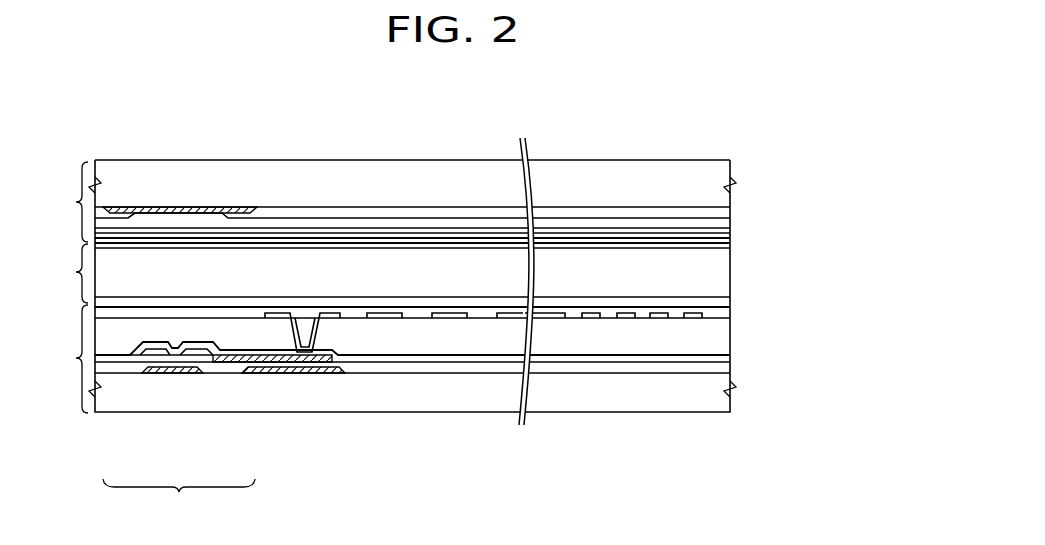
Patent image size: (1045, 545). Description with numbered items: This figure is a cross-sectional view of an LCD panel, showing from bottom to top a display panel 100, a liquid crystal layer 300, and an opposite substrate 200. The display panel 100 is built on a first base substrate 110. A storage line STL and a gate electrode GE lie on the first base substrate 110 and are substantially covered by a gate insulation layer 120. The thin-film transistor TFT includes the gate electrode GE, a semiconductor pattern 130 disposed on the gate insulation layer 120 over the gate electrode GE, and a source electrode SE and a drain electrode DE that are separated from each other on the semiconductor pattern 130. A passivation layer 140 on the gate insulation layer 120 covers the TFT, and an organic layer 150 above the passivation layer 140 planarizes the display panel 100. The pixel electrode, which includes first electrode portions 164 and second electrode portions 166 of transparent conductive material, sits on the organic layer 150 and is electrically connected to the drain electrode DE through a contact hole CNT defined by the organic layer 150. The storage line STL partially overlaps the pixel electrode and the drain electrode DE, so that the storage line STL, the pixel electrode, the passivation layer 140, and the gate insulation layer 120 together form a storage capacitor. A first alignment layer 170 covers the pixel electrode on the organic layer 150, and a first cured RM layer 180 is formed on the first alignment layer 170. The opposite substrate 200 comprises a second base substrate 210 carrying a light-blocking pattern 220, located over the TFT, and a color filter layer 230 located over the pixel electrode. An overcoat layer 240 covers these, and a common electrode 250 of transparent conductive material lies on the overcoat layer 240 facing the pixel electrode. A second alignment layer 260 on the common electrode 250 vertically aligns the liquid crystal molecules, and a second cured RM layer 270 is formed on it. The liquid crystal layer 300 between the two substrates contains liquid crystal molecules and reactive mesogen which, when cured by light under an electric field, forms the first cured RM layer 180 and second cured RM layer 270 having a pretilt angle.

The display panel 100 is at (63, 359).
The first base substrate 110 is at (718, 392).
The gate insulation layer 120 is at (718, 363).
The semiconductor pattern 130 is at (195, 356).
The passivation layer 140 is at (718, 357).
The organic layer 150 is at (718, 333).
The first electrode portions 164 is at (423, 319).
The second electrode portions 166 is at (589, 319).
The first alignment layer 170 is at (718, 312).
The first cured RM layer 180 is at (718, 301).
The opposite substrate 200 is at (63, 202).
The second base substrate 210 is at (722, 173).
The light-blocking pattern 220 is at (196, 207).
The color filter layer 230 is at (722, 213).
The overcoat layer 240 is at (722, 222).
The common electrode 250 is at (722, 231).
The second alignment layer 260 is at (722, 238).
The second cured RM layer 270 is at (722, 245).
The liquid crystal layer 300 is at (63, 273).
The source electrode SE is at (152, 356).
The gate electrode GE is at (167, 373).
The drain electrode DE is at (186, 356).
The thin-film transistor TFT is at (179, 497).
The storage line STL is at (325, 373).
The contact hole CNT is at (304, 318).